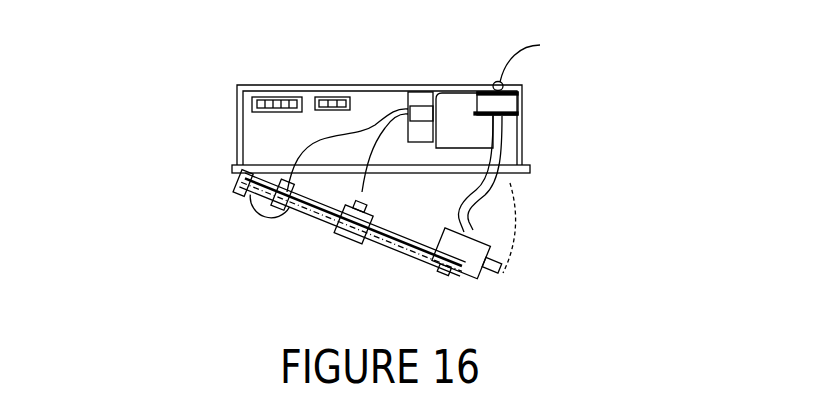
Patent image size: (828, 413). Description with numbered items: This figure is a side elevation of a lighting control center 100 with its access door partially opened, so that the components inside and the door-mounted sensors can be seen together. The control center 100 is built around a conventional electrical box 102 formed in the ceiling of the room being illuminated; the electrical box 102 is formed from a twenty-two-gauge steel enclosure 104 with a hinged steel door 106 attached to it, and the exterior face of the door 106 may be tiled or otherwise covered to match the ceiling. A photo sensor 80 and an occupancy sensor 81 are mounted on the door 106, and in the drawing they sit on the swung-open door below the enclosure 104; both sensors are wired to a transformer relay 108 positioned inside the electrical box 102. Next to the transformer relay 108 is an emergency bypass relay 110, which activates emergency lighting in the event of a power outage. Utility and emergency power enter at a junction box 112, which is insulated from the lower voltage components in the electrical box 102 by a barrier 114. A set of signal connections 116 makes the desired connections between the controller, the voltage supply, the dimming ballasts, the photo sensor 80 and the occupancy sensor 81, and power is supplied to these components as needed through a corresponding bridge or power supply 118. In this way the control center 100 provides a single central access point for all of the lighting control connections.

The lighting control center 100 is at (208, 127).
The electrical box 102 is at (235, 88).
The steel enclosure 104 is at (521, 148).
The hinged steel door 106 is at (243, 187).
The transformer relay 108 is at (407, 92).
The emergency bypass relay 110 is at (470, 288).
The junction box 112 is at (509, 106).
The barrier 114 is at (455, 92).
The signal connections 116 is at (333, 92).
The power supply 118 is at (263, 85).
The photo sensor 80 is at (263, 218).
The occupancy sensor 81 is at (350, 241).